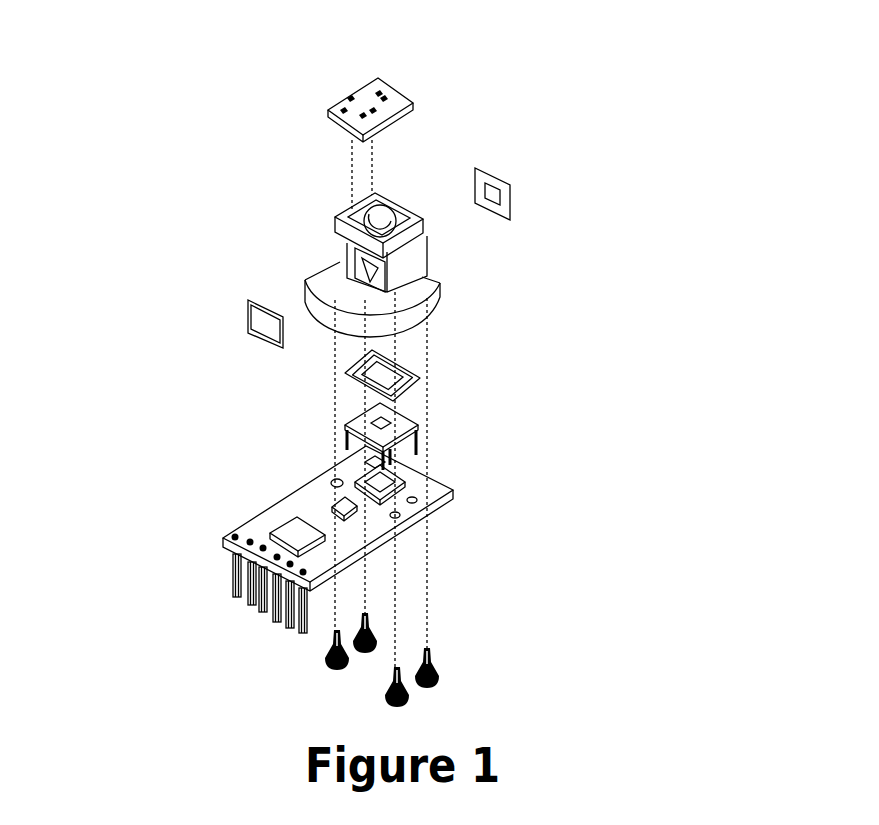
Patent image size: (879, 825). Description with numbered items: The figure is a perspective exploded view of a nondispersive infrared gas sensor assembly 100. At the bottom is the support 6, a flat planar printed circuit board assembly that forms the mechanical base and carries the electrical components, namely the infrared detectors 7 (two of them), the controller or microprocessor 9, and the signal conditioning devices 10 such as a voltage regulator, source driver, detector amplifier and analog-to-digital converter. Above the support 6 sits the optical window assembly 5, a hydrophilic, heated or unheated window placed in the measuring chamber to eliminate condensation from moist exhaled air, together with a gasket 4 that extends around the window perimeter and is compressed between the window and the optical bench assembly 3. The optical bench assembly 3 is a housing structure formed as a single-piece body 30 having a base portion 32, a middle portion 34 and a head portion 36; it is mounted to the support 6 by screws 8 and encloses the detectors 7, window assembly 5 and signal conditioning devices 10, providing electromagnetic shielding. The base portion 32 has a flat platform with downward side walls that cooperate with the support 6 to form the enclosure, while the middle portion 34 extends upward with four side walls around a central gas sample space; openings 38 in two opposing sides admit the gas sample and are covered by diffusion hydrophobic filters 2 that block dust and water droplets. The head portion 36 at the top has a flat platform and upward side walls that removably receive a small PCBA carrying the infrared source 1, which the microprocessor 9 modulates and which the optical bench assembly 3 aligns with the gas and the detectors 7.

The NDIR gas sensor assembly 100 is at (98, 112).
The infrared source 1 is at (407, 92).
The diffusion hydrophobic filters 2 is at (512, 183).
The body 30 is at (314, 195).
The base portion 32 is at (310, 282).
The middle portion 34 is at (418, 258).
The head portion 36 is at (388, 200).
The openings 38 is at (345, 253).
The optical bench assembly 3 is at (445, 288).
The gasket 4 is at (423, 367).
The optical window assembly 5 is at (423, 423).
The support 6 is at (453, 485).
The detectors 7 is at (457, 500).
The screws 8 is at (432, 655).
The microprocessor 9 is at (278, 528).
The signal conditioning devices 10 is at (333, 500).